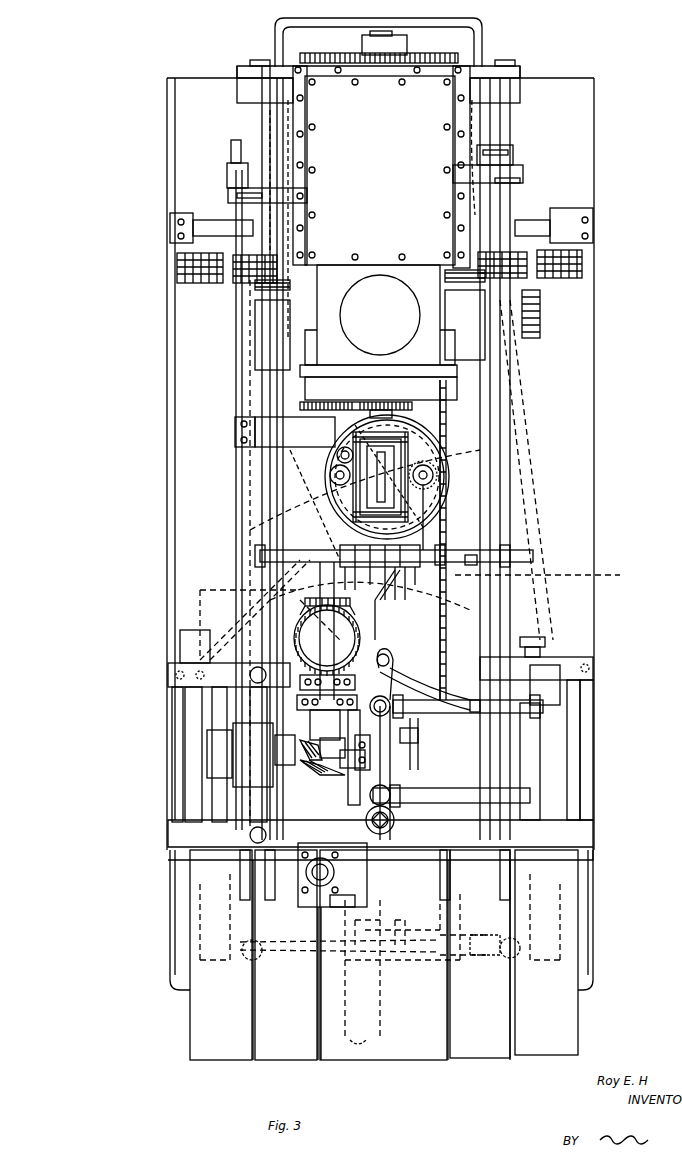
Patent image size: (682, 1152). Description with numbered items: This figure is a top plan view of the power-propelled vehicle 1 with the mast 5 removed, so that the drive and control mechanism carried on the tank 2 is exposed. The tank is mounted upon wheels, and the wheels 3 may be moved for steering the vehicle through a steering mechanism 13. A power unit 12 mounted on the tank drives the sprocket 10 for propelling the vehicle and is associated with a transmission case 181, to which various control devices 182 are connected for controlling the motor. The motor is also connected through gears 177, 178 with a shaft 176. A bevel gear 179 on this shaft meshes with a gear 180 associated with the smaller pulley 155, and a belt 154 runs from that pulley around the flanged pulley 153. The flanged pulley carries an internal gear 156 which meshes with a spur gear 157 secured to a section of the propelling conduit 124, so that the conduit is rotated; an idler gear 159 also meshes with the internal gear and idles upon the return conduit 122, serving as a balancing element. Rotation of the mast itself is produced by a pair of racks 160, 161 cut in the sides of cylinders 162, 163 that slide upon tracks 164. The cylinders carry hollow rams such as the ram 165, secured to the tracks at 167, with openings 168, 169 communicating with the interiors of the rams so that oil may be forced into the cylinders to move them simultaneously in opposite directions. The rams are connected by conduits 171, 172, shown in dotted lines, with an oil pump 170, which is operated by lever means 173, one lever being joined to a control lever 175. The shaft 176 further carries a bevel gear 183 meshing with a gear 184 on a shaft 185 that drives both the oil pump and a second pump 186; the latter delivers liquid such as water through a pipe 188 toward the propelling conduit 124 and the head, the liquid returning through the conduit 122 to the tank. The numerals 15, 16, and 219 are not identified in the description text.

The power-propelled vehicle 1 is at (156, 163).
The tank 2 is at (166, 465).
The wheels 3 is at (190, 925).
The mast 5 is at (411, 442).
The sprocket 10 is at (322, 56).
The power unit 12 is at (332, 285).
The steering mechanism 13 is at (355, 960).
The spool 15 is at (380, 471).
The ring gear 16 is at (398, 530).
The conduit 122 is at (330, 480).
The propelling conduit 124 is at (433, 475).
The flanged pulley 153 is at (445, 428).
The belt 154 is at (395, 590).
The smaller pulley 155 is at (312, 606).
The internal gear 156 is at (432, 462).
The spur gear 157 is at (435, 482).
The idler gear 159 is at (285, 432).
The rack 160 is at (442, 410).
The rack 161 is at (322, 362).
The cylinder 162 is at (480, 367).
The cylinder 163 is at (300, 398).
The tracks 164 is at (488, 218).
The hollow ram 165 is at (475, 197).
The ram securing point 167 is at (564, 90).
The opening 168 is at (282, 235).
The opening 169 is at (286, 98).
The oil pump 170 is at (520, 737).
The conduit 171 is at (262, 340).
The conduit 172 is at (530, 403).
The lever means 173 is at (420, 728).
The control lever 175 is at (445, 548).
The shaft 176 is at (330, 462).
The gear 177 is at (322, 393).
The gear 178 is at (405, 393).
The bevel gear 179 is at (318, 595).
The gear 180 is at (345, 650).
The transmission case 181 is at (390, 151).
The control devices 182 is at (180, 268).
The bevel gear 183 is at (310, 715).
The gear 184 is at (310, 768).
The shaft 185 is at (313, 765).
The pump 186 is at (218, 748).
The pipe 188 is at (298, 549).
The spring 219 is at (335, 426).